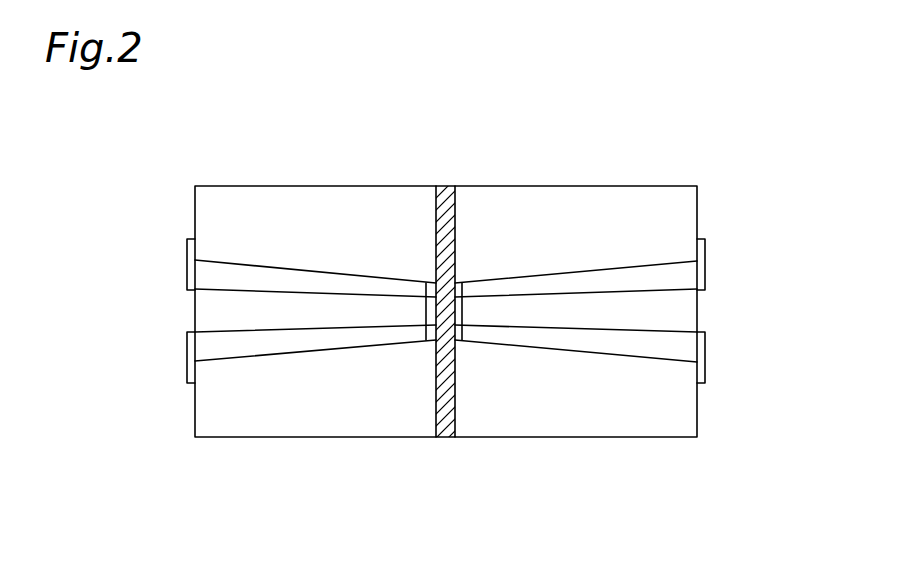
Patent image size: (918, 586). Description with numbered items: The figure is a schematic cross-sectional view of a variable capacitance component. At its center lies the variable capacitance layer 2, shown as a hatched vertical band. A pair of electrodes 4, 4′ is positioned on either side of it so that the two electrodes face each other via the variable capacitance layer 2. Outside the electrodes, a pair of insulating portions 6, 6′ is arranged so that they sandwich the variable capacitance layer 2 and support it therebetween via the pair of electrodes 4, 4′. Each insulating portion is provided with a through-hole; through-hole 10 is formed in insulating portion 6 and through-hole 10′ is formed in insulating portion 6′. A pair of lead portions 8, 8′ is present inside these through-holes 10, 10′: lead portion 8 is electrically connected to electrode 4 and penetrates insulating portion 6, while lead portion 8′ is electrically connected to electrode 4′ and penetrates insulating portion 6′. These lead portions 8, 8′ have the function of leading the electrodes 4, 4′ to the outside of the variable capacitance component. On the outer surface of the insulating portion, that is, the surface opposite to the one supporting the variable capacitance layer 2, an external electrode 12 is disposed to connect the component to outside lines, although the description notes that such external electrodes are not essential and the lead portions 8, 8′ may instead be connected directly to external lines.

The variable capacitance layer 2 is at (443, 186).
The electrode 4 is at (432, 318).
The electrode 4′ is at (458, 318).
The insulating portion 6 is at (283, 193).
The insulating portion 6′ is at (630, 195).
The lead portion 8 is at (218, 343).
The lead portion 8′ is at (657, 345).
The through-hole 10 is at (200, 310).
The through-hole 10′ is at (690, 312).
The external electrode 12 is at (702, 372).